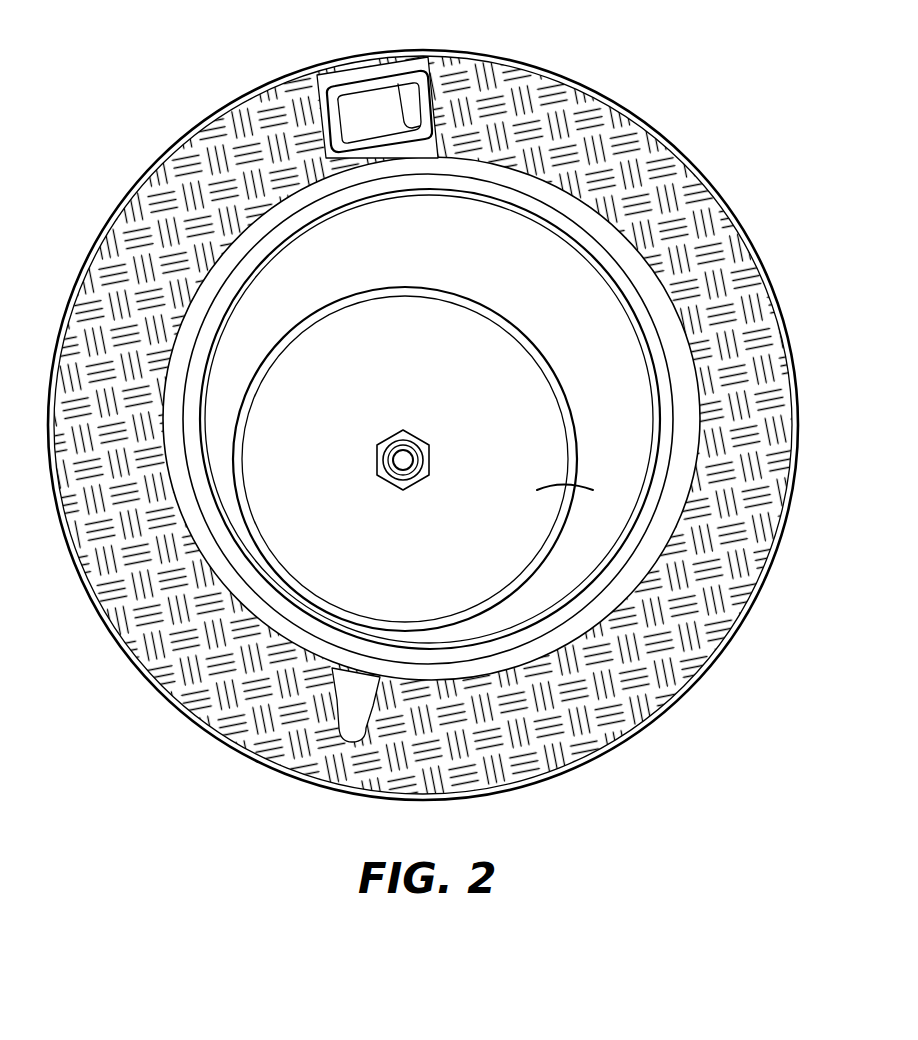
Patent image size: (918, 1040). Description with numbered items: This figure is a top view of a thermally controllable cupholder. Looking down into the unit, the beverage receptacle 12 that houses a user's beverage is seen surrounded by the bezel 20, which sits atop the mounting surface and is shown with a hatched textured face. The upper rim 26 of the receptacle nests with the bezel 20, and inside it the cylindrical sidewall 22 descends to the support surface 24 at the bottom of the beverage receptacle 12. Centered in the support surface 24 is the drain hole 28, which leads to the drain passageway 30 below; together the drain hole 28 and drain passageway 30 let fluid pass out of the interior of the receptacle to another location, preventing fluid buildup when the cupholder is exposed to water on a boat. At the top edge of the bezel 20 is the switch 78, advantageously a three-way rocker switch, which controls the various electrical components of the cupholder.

The beverage receptacle 12 is at (537, 430).
The bezel 20 is at (565, 88).
The cylindrical sidewall 22 is at (552, 495).
The support surface 24 is at (515, 378).
The upper rim 26 is at (533, 192).
The drain hole 28 is at (412, 477).
The drain passageway 30 is at (398, 457).
The switch 78 is at (363, 88).